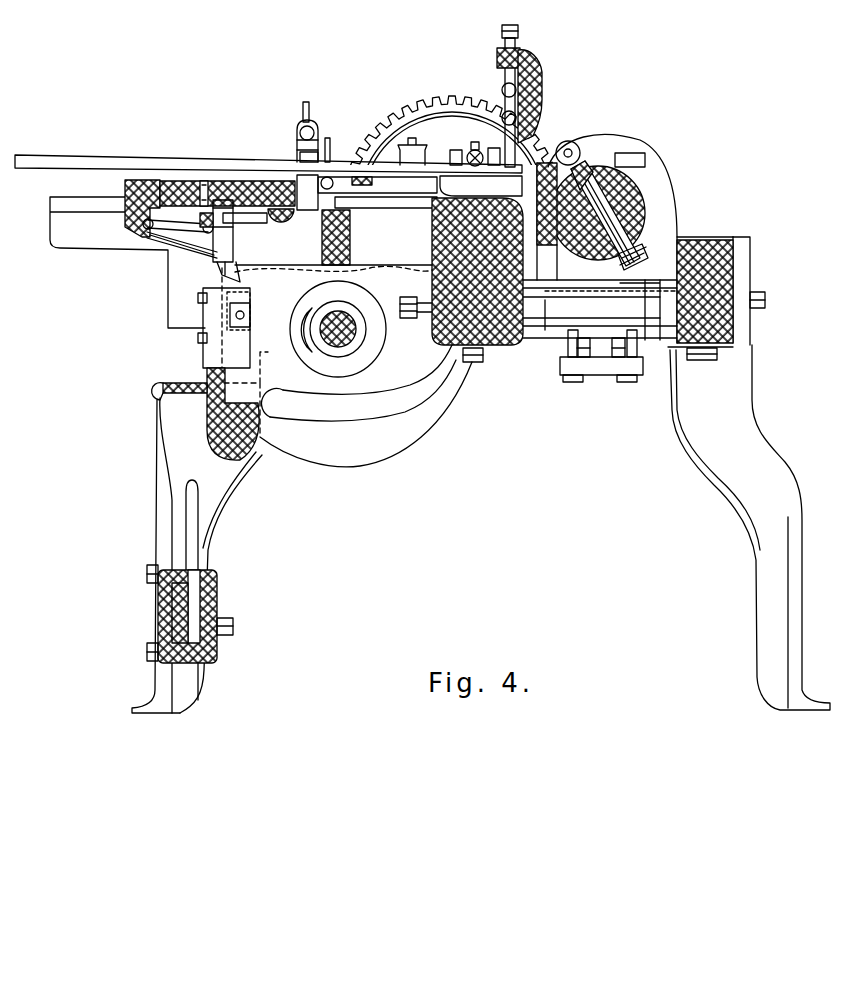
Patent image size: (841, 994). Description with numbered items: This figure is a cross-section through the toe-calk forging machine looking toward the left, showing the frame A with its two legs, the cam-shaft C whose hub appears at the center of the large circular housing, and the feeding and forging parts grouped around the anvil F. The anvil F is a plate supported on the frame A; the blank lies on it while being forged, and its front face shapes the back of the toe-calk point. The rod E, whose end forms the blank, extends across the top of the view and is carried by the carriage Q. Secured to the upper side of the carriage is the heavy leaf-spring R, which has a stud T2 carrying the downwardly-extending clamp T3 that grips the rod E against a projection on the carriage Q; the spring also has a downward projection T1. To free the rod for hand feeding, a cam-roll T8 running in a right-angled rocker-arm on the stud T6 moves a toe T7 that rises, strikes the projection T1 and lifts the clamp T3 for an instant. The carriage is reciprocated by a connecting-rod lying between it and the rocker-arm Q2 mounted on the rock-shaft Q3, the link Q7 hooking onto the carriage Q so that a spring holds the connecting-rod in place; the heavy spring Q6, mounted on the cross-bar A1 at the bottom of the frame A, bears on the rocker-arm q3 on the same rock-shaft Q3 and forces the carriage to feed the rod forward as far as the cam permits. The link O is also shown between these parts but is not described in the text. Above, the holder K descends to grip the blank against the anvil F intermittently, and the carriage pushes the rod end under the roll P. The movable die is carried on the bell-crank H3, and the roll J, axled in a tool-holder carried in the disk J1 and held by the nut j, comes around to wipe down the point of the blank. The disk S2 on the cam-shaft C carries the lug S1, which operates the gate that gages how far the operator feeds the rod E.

The rod E is at (268, 154).
The carriage Q is at (127, 195).
The leaf-spring R is at (222, 181).
The link O is at (160, 233).
The link Q7 is at (182, 250).
The rocker-arm Q2 is at (217, 262).
The toe T7 is at (228, 222).
The stud T6 is at (280, 222).
The downward projection T1 is at (307, 210).
The cam-roll T8 is at (318, 121).
The stud T2 is at (297, 132).
The clamp T3 is at (300, 157).
The anvil F is at (468, 182).
The roll P is at (479, 152).
The holder K is at (543, 103).
The roll J is at (576, 145).
The bell-crank H3 is at (588, 168).
The disk J1 is at (647, 210).
The nut j is at (640, 266).
The frame A is at (733, 263).
The rocker-arm q3 is at (207, 353).
The rock-shaft Q3 is at (260, 437).
The spring Q6 is at (163, 403).
The cross-bar A1 is at (158, 626).
The disk S2 is at (352, 358).
The lug S1 is at (298, 323).
The cam-shaft C is at (330, 342).